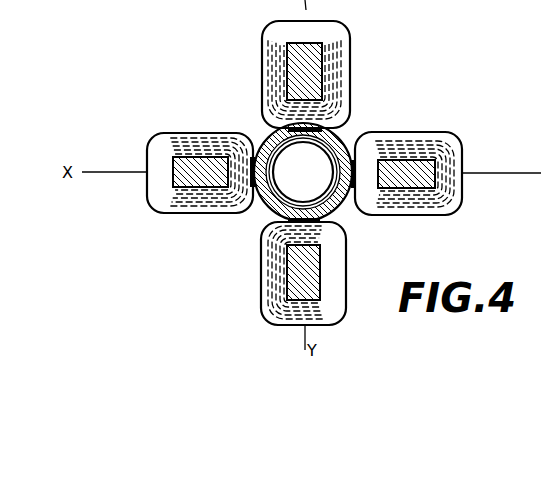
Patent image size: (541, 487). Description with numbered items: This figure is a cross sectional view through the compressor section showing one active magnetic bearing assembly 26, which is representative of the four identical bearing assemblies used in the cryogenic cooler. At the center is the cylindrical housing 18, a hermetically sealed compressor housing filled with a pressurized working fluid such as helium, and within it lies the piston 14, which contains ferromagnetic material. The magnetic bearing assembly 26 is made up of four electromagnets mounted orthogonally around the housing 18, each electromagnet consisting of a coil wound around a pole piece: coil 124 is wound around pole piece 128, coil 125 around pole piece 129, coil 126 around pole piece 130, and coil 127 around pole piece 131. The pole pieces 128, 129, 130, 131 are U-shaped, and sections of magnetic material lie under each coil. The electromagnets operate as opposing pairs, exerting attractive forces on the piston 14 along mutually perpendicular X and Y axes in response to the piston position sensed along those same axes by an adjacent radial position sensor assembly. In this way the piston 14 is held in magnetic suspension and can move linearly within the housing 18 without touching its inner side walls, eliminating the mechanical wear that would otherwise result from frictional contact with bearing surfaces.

The piston 14 is at (340, 210).
The cylindrical housing 18 is at (344, 134).
The active magnetic bearing assembly 26 is at (390, 62).
The coil 124 is at (341, 29).
The coil 125 is at (462, 172).
The coil 126 is at (338, 321).
The coil 127 is at (157, 137).
The pole piece 128 is at (292, 65).
The pole piece 129 is at (413, 183).
The pole piece 130 is at (293, 267).
The pole piece 131 is at (202, 163).